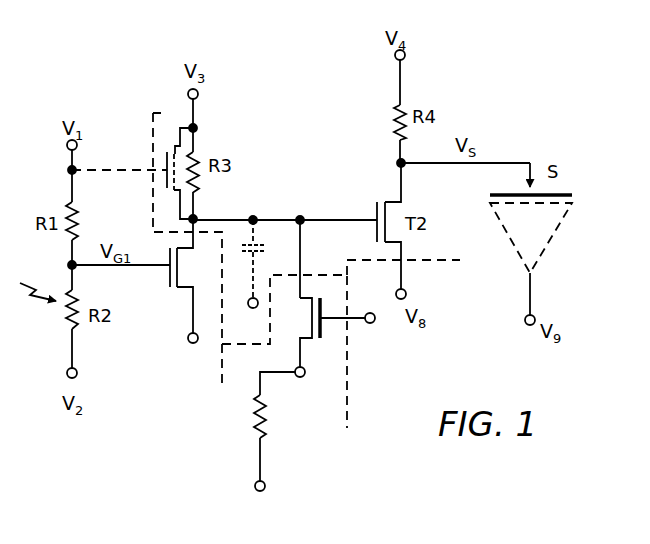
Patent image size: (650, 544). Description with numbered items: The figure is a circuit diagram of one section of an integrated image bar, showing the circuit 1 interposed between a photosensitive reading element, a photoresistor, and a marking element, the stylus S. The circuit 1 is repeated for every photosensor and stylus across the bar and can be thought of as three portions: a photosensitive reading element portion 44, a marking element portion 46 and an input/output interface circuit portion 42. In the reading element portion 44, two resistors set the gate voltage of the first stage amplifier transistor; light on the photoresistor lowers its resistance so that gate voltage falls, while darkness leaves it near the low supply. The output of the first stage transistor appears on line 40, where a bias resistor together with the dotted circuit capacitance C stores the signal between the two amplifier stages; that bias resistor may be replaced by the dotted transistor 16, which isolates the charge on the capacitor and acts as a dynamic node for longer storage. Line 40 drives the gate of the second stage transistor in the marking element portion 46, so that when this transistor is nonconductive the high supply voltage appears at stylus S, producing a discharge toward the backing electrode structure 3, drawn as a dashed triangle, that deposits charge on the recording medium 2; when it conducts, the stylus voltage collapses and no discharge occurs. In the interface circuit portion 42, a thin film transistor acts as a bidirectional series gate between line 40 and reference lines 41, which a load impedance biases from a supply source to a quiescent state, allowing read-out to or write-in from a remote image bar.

The circuit 1 is at (143, 93).
The transistor 16 is at (174, 153).
The marking element portion 46 is at (285, 202).
The line 40 is at (350, 220).
The photosensitive reading element portion 44 is at (152, 300).
The reference lines 41 is at (271, 372).
The input/output interface circuit portion 42 is at (312, 407).
The recording medium 2 is at (565, 195).
The backing electrode structure 3 is at (556, 242).